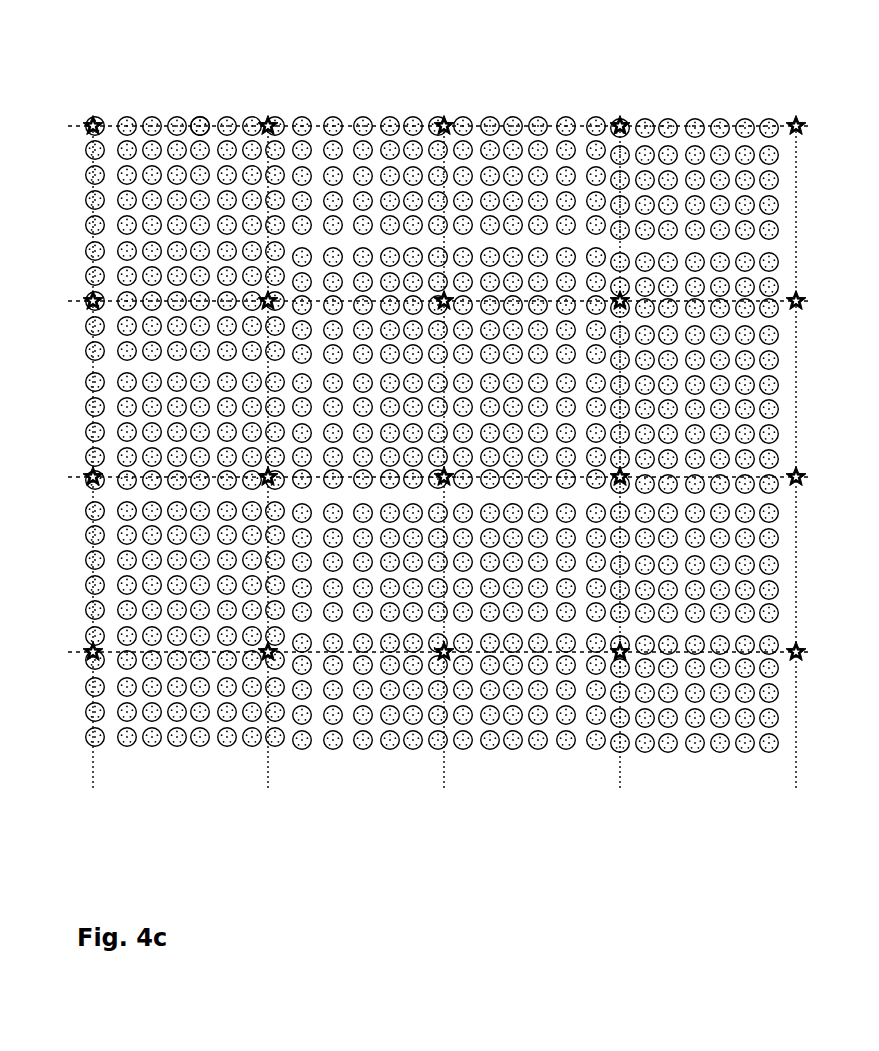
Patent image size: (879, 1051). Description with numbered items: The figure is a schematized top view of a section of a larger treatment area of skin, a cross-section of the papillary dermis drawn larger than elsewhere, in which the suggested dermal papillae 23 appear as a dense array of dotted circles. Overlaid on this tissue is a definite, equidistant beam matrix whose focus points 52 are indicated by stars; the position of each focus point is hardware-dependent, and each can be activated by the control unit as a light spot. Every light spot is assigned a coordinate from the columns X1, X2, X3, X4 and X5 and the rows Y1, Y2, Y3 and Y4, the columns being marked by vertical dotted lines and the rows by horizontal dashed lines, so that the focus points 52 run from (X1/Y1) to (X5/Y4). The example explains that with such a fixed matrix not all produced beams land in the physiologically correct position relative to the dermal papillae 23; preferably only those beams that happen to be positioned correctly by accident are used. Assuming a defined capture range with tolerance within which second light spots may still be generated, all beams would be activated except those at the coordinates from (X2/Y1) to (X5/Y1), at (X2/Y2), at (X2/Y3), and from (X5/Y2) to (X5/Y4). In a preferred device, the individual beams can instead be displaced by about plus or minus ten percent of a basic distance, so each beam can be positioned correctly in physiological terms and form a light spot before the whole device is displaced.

The focus points 52 is at (96, 124).
The dermal papillae 23 is at (201, 124).
The first X coordinate of the beam matrix X1 is at (96, 476).
The second X coordinate of the beam matrix X2 is at (269, 476).
The third X coordinate of the beam matrix X3 is at (450, 478).
The fourth X coordinate of the beam matrix X4 is at (625, 474).
The fifth X coordinate of the beam matrix X5 is at (790, 473).
The first Y coordinate of the beam matrix Y1 is at (70, 652).
The second Y coordinate of the beam matrix Y2 is at (68, 477).
The third Y coordinate of the beam matrix Y3 is at (68, 301).
The fourth Y coordinate of the beam matrix Y4 is at (68, 126).